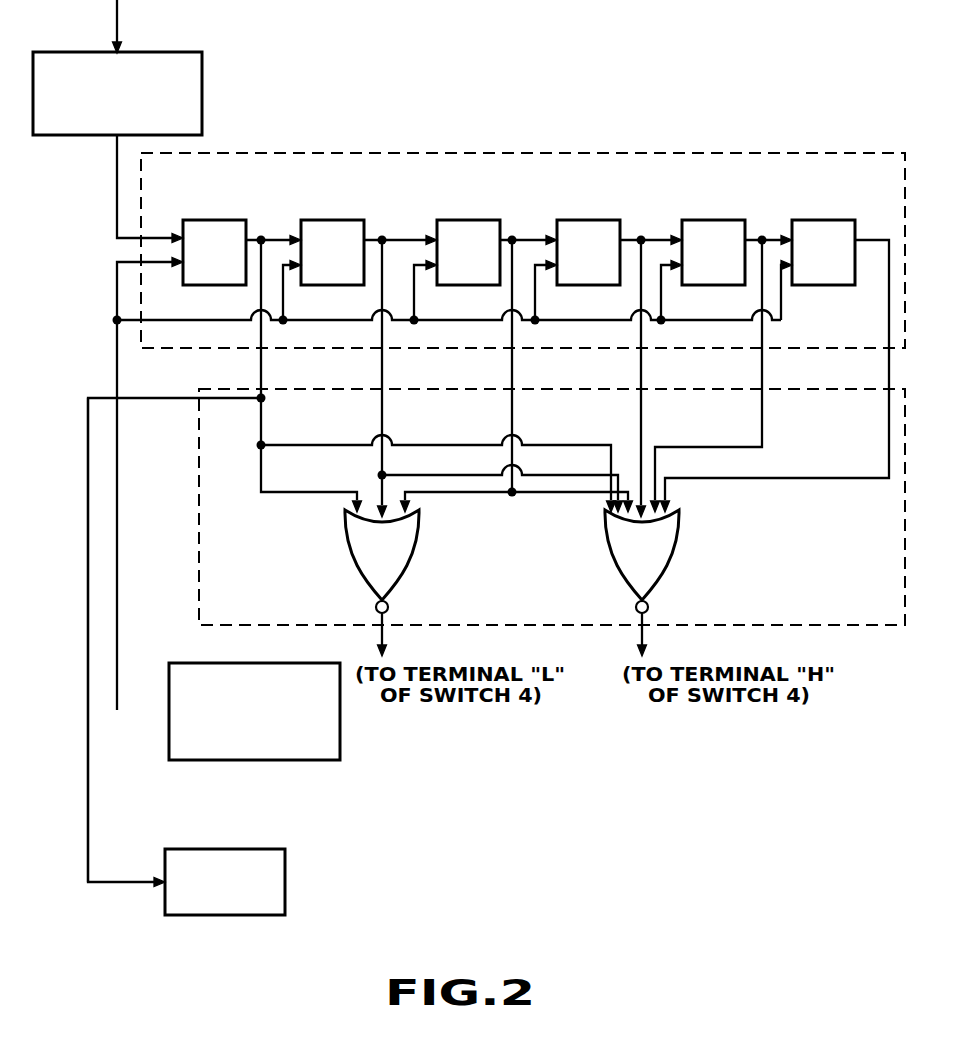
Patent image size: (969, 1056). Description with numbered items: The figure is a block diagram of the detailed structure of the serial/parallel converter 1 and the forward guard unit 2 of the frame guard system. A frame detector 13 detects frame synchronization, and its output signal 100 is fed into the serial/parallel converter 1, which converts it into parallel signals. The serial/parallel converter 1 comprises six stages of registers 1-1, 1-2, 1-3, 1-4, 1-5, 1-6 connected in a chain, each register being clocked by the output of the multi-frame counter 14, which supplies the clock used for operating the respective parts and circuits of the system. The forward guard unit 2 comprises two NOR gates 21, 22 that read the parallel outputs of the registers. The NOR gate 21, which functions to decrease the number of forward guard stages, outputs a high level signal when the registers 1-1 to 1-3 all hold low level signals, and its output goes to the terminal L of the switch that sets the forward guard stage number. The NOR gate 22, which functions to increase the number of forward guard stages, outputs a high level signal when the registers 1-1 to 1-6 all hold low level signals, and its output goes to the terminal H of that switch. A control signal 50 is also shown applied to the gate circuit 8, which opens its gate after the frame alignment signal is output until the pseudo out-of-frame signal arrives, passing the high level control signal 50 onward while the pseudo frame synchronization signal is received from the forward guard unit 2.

The frame detector 13 is at (203, 98).
The output signal 100 is at (130, 238).
The serial/parallel converter 1 is at (300, 153).
The register 1-1 is at (213, 220).
The register 1-2 is at (331, 220).
The register 1-3 is at (467, 220).
The register 1-4 is at (587, 220).
The register 1-5 is at (712, 220).
The register 1-6 is at (822, 220).
The forward guard unit 2 is at (196, 605).
The NOR gate 21 is at (413, 572).
The NOR gate 22 is at (673, 574).
The multi-frame counter 14 is at (270, 760).
The control signal 50 is at (90, 828).
The gate circuit 8 is at (286, 887).